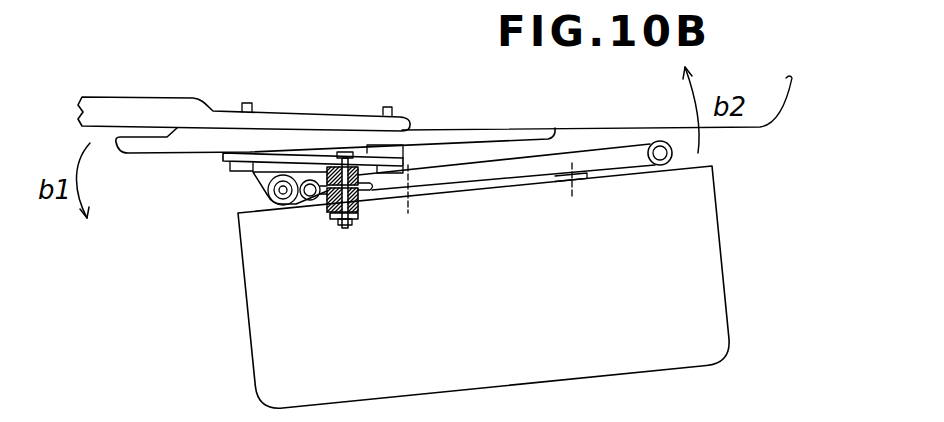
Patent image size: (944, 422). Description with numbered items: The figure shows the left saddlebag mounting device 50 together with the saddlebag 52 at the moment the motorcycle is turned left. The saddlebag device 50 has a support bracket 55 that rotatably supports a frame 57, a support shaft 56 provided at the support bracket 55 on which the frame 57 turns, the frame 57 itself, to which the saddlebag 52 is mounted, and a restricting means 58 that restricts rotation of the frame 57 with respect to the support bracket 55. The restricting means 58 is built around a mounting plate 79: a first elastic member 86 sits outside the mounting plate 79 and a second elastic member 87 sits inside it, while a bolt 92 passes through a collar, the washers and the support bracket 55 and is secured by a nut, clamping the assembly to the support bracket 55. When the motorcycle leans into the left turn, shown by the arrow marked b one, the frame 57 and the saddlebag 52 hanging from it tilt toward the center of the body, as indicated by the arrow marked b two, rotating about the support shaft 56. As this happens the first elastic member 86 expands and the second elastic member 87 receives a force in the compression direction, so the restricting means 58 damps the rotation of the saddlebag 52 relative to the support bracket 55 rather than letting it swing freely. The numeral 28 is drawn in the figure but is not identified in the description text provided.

The roof side rail 28 is at (265, 113).
The saddlebag mounting device 50 is at (232, 78).
The saddlebag 52 is at (722, 258).
The support bracket 55 is at (295, 153).
The support shaft 56 is at (283, 192).
The frame 57 is at (508, 174).
The restricting means 58 is at (326, 226).
The mounting plate 79 is at (400, 178).
The first elastic member 86 is at (362, 212).
The second elastic member 87 is at (363, 166).
The bolt 92 is at (343, 229).